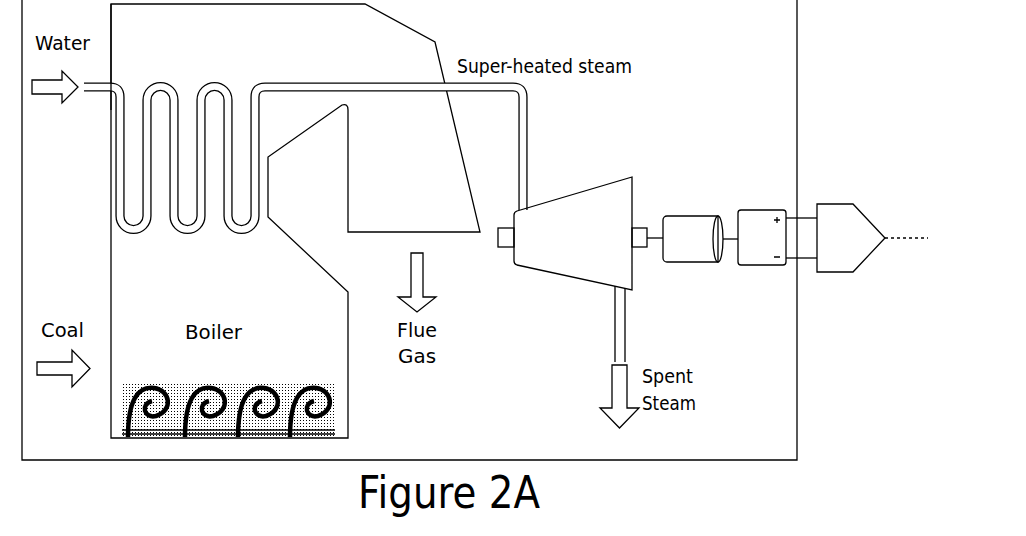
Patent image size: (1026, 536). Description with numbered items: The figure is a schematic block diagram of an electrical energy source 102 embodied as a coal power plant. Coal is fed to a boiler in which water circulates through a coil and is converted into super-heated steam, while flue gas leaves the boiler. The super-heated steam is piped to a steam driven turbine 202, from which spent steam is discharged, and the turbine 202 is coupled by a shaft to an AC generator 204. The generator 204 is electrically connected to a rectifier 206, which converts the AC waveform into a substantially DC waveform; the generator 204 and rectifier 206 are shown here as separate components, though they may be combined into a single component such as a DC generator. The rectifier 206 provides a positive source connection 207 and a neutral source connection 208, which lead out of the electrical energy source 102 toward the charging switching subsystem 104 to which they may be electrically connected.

The electrical energy source 102 is at (778, 20).
The turbine 202 is at (589, 242).
The generator 204 is at (707, 247).
The rectifier 206 is at (779, 247).
The positive source connection 207 is at (777, 217).
The neutral source connection 208 is at (777, 262).
The charging switching subsystem 104 is at (872, 238).